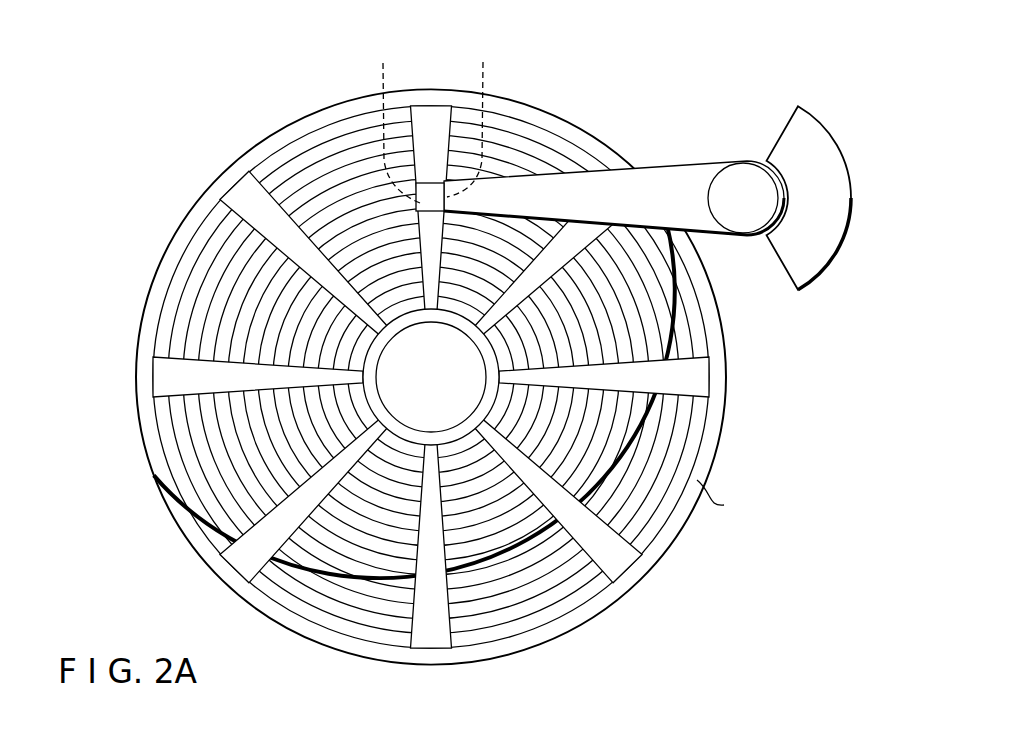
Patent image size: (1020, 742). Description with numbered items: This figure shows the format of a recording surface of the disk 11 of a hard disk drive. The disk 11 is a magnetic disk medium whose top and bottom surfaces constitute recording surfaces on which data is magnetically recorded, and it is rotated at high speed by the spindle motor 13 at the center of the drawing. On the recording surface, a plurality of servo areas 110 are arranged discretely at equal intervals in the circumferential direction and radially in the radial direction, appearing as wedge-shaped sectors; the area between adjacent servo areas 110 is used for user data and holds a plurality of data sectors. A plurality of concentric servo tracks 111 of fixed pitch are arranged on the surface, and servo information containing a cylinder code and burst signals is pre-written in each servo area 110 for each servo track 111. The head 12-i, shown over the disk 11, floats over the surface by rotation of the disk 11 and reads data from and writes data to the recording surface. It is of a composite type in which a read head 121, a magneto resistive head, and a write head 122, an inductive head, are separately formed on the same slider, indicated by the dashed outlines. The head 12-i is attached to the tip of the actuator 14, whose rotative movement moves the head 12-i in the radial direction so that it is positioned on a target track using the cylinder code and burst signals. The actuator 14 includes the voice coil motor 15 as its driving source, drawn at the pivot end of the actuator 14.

The disk 11 is at (449, 352).
The head 12-i is at (432, 164).
The read head 121 is at (388, 121).
The write head 122 is at (474, 118).
The spindle motor 13 is at (458, 402).
The actuator 14 is at (570, 118).
The voice coil motor 15 is at (812, 265).
The servo area 110 is at (242, 190).
The servo track 111 is at (192, 283).